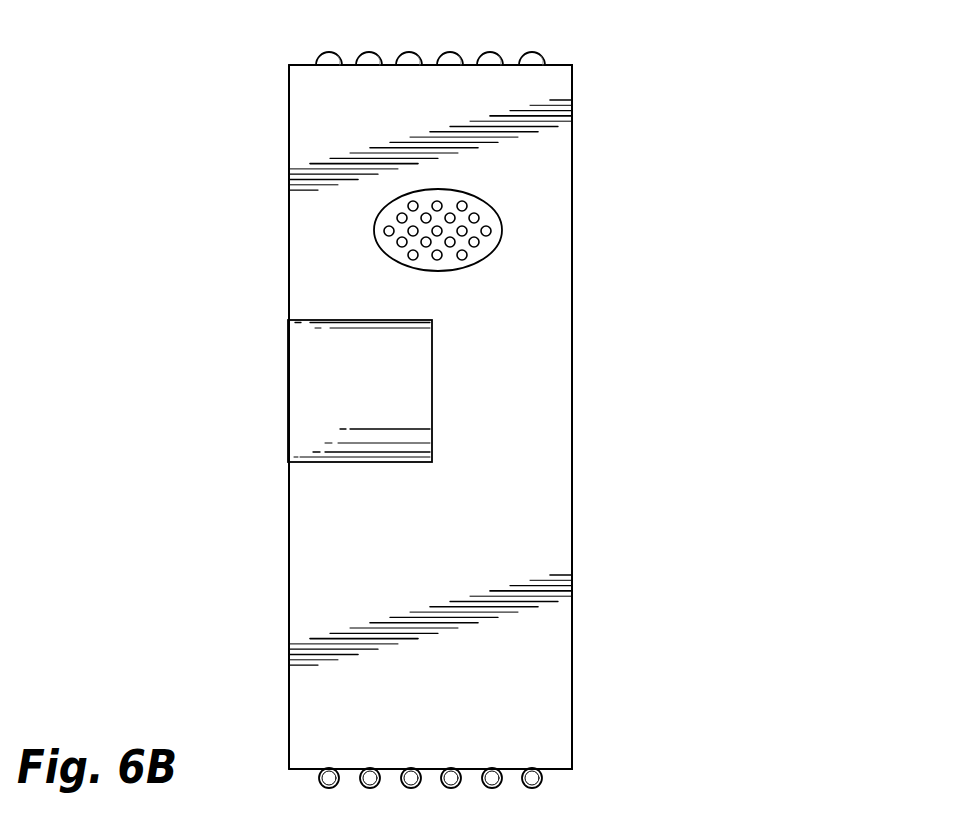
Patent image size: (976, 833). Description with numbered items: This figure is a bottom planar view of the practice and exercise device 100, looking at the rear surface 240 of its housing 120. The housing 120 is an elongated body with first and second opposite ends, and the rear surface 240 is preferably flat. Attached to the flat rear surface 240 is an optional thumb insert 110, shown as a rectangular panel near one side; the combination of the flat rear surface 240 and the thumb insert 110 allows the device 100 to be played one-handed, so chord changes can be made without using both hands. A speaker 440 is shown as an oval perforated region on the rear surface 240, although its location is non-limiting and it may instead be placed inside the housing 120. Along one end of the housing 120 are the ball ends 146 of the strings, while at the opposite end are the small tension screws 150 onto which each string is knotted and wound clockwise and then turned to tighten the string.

The practice and exercise device 100 is at (618, 459).
The thumb insert 110 is at (378, 394).
The housing 120 is at (289, 519).
The ball end 146 is at (538, 786).
The tension screw 150 is at (533, 55).
The rear surface 240 is at (433, 532).
The speaker 440 is at (490, 244).